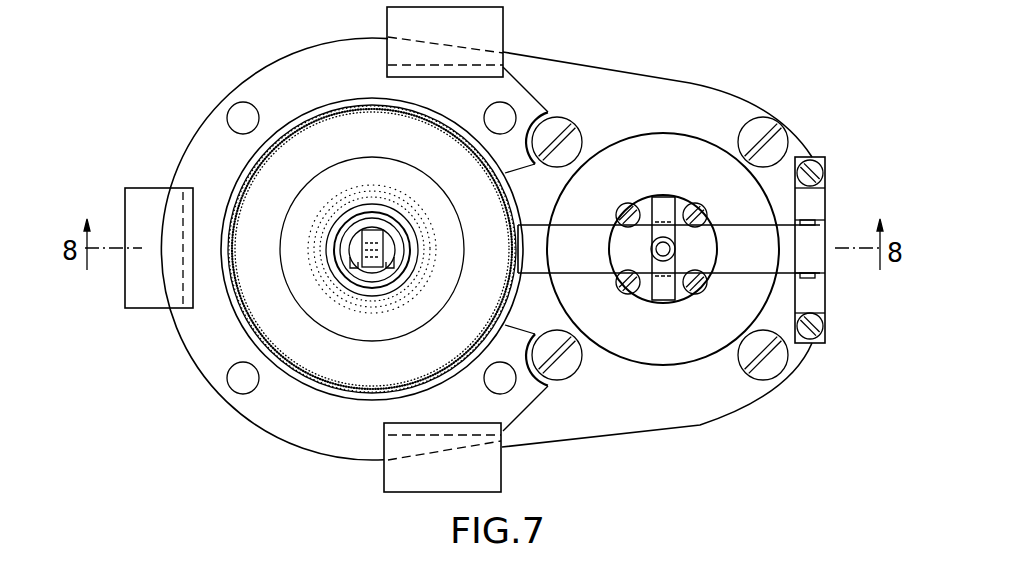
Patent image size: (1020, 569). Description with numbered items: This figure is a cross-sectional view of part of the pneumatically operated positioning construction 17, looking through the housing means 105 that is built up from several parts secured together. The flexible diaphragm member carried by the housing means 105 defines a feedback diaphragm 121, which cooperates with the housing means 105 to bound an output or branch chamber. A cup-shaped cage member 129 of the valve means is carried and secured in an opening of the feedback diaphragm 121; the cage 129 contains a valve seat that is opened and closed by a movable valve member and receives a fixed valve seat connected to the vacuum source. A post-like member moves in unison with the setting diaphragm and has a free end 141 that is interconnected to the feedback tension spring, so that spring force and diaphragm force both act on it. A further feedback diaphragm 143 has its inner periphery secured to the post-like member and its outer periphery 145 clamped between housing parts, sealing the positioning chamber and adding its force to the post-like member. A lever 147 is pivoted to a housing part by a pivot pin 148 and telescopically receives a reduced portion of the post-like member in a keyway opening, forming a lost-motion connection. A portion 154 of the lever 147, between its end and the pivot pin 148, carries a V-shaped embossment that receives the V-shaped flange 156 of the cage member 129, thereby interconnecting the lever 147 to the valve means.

The pneumatically operated positioning construction 17 is at (835, 49).
The housing means 105 is at (693, 425).
The feedback diaphragm 121 is at (663, 147).
The cup-shaped cage member 129 is at (647, 301).
The free end 141 is at (377, 233).
The feedback diaphragm 143 is at (333, 143).
The outer periphery 145 is at (345, 388).
The lever 147 is at (763, 267).
The pivot pin 148 is at (808, 282).
The portion of the lever 154 is at (630, 242).
The V-shaped flange 156 is at (667, 248).